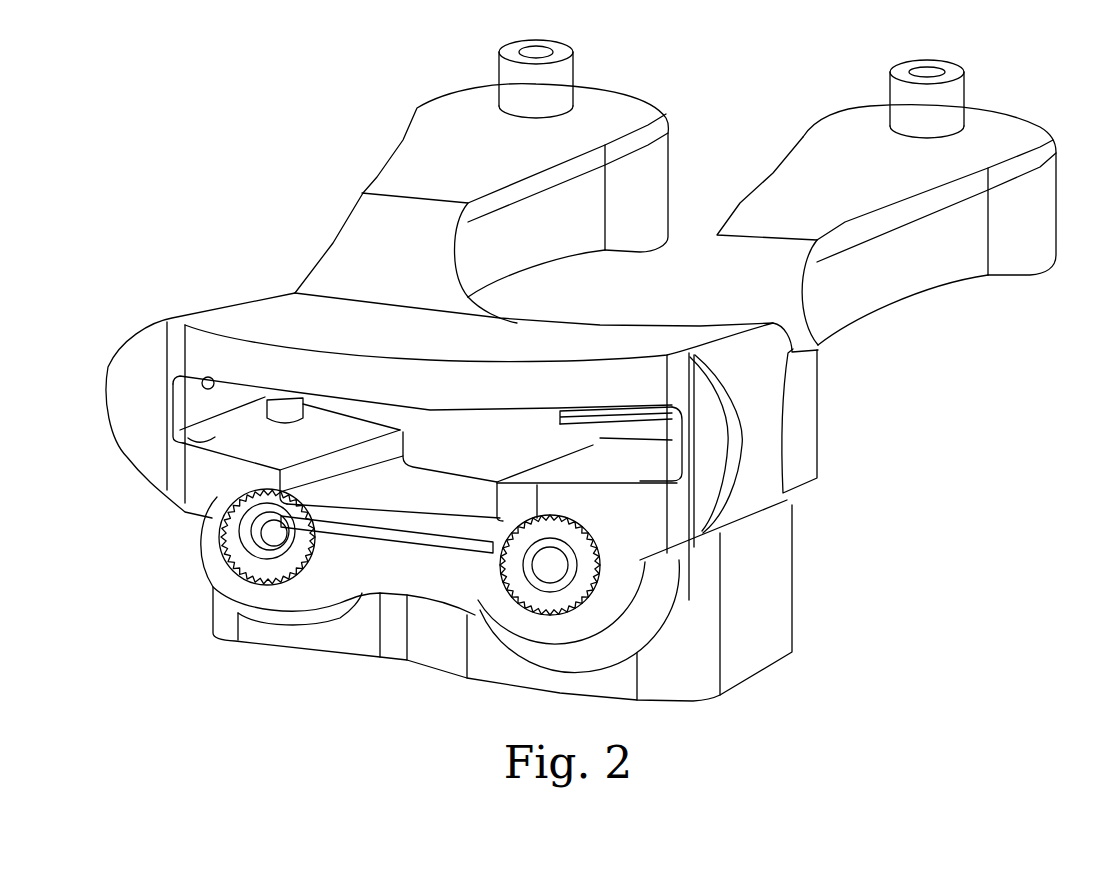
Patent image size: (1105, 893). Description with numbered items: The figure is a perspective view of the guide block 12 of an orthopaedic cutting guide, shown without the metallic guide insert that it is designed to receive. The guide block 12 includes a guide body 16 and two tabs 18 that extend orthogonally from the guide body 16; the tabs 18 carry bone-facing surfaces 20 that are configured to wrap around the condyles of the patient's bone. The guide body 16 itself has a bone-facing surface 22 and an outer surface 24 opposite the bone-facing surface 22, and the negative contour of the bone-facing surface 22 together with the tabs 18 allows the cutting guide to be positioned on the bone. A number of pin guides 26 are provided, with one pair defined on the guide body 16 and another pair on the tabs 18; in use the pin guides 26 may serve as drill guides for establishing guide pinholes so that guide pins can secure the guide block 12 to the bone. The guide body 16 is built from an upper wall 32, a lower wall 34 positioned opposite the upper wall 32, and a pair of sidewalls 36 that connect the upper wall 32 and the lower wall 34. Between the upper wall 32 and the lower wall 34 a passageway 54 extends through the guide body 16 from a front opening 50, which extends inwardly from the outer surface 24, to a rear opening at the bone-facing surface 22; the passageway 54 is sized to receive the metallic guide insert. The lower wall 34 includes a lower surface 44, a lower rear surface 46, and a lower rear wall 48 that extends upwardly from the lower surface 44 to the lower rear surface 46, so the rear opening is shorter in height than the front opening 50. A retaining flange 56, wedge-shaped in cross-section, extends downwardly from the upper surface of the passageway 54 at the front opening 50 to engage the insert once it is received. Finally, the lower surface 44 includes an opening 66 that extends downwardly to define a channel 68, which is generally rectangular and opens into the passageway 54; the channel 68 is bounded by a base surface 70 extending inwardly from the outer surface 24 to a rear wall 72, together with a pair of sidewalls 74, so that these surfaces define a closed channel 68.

The guide block 12 is at (212, 123).
The guide body 16 is at (773, 373).
The tabs 18 is at (413, 147).
The bone-facing surfaces 20 is at (903, 297).
The bone-facing surface 22 is at (792, 543).
The outer surface 24 is at (487, 385).
The pin guides 26 is at (966, 88).
The upper wall 32 is at (207, 377).
The lower wall 34 is at (187, 447).
The sidewalls 36 is at (183, 408).
The lower surface 44 is at (663, 468).
The lower rear surface 46 is at (673, 420).
The lower rear wall 48 is at (672, 437).
The front opening 50 is at (273, 443).
The passageway 54 is at (338, 430).
The retaining flange 56 is at (265, 392).
The opening 66 is at (445, 455).
The channel 68 is at (413, 492).
The base surface 70 is at (450, 507).
The rear wall 72 is at (535, 453).
The sidewalls 74 is at (297, 472).